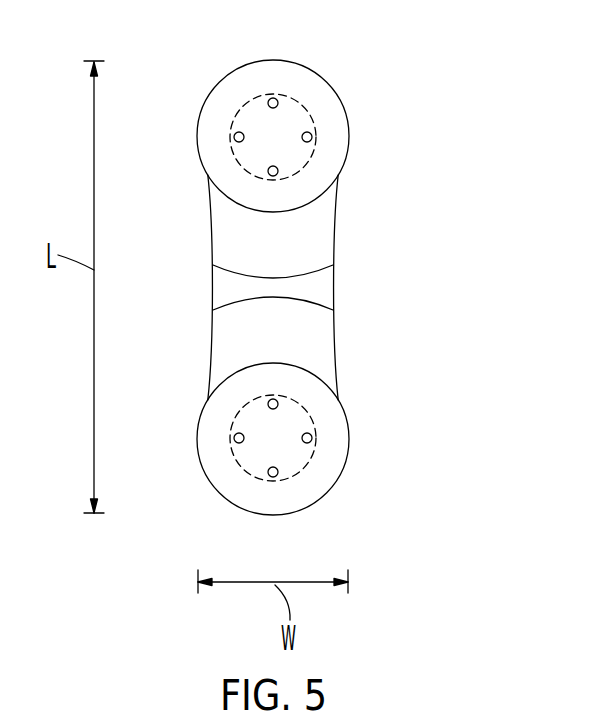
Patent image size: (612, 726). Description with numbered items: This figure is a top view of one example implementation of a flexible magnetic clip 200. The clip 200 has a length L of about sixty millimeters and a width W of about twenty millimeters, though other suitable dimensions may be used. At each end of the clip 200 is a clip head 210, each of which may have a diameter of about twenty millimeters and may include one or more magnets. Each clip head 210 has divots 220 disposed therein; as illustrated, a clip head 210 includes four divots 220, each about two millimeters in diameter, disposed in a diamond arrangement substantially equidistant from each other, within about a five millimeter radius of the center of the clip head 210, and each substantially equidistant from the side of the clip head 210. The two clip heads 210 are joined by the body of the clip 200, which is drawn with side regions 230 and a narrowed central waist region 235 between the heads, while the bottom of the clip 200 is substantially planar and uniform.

The flexible magnetic clip 200 is at (413, 127).
The clip head 210 is at (225, 152).
The divots 220 is at (274, 98).
The intermediate portion 230 is at (320, 240).
The waist section 235 is at (320, 287).